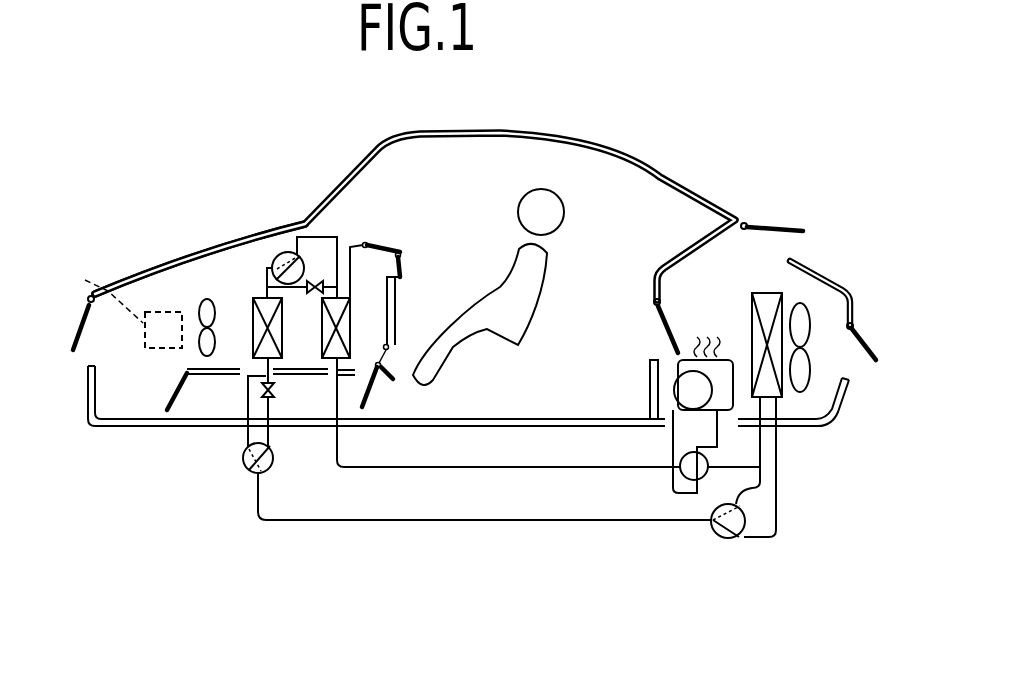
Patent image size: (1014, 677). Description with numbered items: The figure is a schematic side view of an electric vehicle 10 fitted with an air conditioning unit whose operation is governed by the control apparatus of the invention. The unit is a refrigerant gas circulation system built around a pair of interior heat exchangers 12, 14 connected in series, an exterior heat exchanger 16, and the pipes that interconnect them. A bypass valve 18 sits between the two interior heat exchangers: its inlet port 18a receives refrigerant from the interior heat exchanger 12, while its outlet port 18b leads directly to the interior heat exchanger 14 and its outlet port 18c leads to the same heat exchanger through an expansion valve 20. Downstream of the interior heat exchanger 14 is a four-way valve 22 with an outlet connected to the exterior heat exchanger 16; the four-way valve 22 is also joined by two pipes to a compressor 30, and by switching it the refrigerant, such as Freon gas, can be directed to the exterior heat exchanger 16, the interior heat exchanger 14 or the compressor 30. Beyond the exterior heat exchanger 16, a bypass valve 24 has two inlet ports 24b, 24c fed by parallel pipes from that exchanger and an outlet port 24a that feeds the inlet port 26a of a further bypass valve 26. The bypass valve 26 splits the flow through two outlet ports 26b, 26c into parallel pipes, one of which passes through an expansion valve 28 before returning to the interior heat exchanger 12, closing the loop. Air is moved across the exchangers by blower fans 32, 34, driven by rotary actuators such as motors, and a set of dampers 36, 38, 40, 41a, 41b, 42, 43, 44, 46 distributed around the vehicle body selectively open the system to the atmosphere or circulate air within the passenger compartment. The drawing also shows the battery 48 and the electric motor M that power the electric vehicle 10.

The electric vehicle 10 is at (563, 128).
The interior heat exchanger 12 is at (283, 318).
The interior heat exchanger 14 is at (341, 327).
The exterior heat exchanger 16 is at (766, 296).
The bypass valve 18 is at (275, 243).
The inlet port 18a is at (213, 252).
The outlet port 18b is at (293, 253).
The outlet port 18c is at (266, 283).
The expansion valve 20 is at (317, 281).
The four-way valve 22 is at (690, 463).
The bypass valve 24 is at (728, 540).
The outlet port 24a is at (710, 524).
The inlet port 24b is at (773, 494).
The inlet port 24c is at (739, 538).
The bypass valve 26 is at (249, 469).
The inlet port 26a is at (266, 478).
The outlet port 26b is at (243, 442).
The outlet port 26c is at (283, 440).
The expansion valve 28 is at (275, 392).
The compressor 30 is at (683, 388).
The blower fan 32 is at (200, 306).
The blower fan 34 is at (806, 313).
The damper 36 is at (90, 352).
The damper 38 is at (180, 386).
The damper 40 is at (368, 396).
The damper 41a is at (355, 243).
The damper 41b is at (402, 263).
The damper 42 is at (656, 330).
The damper 43 is at (388, 363).
The damper 44 is at (770, 224).
The damper 46 is at (868, 342).
The battery 48 is at (117, 301).
The electric motor M is at (732, 357).